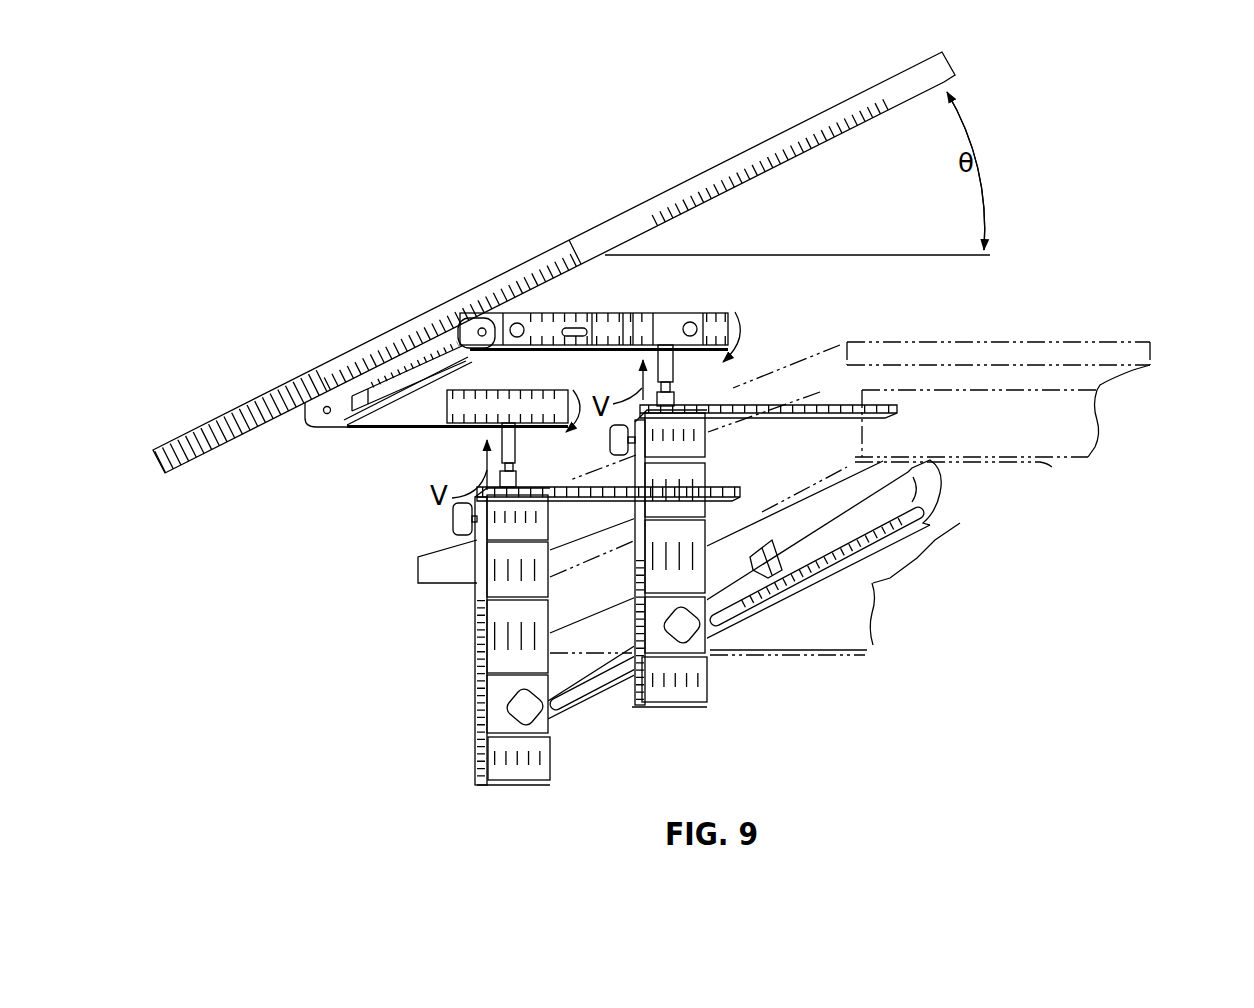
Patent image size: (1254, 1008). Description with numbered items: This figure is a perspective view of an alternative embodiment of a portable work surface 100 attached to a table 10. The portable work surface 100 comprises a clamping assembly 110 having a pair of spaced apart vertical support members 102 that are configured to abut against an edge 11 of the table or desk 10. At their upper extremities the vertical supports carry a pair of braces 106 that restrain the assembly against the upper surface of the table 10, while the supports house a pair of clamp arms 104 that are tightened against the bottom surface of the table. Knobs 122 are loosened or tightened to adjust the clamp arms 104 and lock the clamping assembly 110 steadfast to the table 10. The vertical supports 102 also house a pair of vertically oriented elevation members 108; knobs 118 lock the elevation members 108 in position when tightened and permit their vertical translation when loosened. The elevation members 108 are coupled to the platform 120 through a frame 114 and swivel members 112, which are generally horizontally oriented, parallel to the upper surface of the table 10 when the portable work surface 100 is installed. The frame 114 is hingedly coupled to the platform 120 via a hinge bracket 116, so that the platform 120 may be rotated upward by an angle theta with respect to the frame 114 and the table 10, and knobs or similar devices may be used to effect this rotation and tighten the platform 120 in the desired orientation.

The table 10 is at (1152, 350).
The edge 11 is at (843, 346).
The portable work surface 100 is at (250, 240).
The vertical support members 102 is at (478, 645).
The clamp arms 104 is at (930, 526).
The braces 106 is at (732, 432).
The elevation members 108 is at (676, 400).
The clamping assembly 110 is at (438, 682).
The swivel members 112 is at (760, 303).
The frame 114 is at (580, 302).
The hinge bracket 116 is at (307, 425).
The knobs 118 is at (611, 438).
The platform 120 is at (772, 136).
The knobs 122 is at (695, 630).